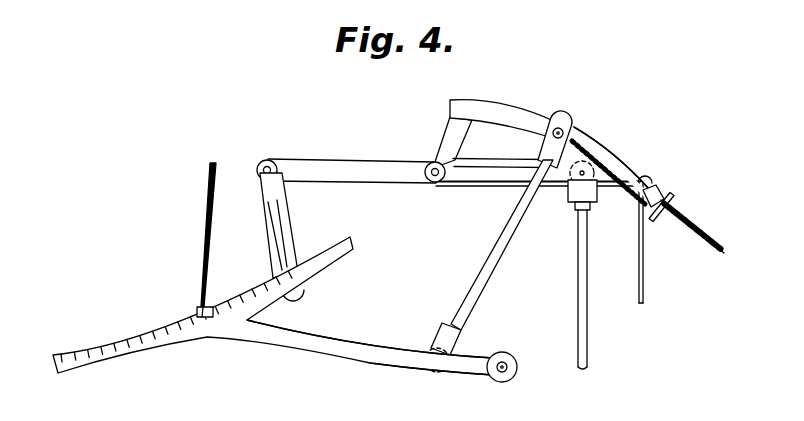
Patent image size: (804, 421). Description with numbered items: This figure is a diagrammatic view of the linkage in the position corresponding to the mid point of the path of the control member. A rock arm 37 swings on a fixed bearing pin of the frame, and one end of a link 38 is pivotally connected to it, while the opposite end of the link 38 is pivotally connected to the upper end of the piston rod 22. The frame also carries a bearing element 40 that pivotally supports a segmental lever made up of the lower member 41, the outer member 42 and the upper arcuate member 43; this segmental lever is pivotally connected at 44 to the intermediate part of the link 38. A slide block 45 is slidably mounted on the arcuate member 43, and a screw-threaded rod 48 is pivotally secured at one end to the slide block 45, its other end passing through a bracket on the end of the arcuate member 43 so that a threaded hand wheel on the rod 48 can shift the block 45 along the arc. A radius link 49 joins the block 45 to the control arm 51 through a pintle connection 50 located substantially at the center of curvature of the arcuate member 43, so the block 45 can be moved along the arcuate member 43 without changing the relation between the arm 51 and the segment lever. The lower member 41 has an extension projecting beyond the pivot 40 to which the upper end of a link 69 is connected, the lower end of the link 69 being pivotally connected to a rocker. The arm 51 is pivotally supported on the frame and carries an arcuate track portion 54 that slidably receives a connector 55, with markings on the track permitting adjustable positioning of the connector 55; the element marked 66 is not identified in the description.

The piston rod 22 is at (578, 276).
The rock arm 37 is at (284, 229).
The link 38 is at (284, 161).
The bearing element 40 is at (627, 162).
The lower member 41 is at (486, 178).
The outer member 42 is at (445, 135).
The upper arcuate member 43 is at (530, 86).
The pivotal connection 44 is at (433, 181).
The slide block 45 is at (574, 131).
The screw-threaded rod 48 is at (702, 236).
The radius link 49 is at (485, 270).
The pintle connection 50 is at (435, 363).
The control arm 51 is at (356, 346).
The track portion 54 is at (100, 347).
The connector 55 is at (198, 312).
The pointer 66 is at (208, 232).
The link 69 is at (644, 283).